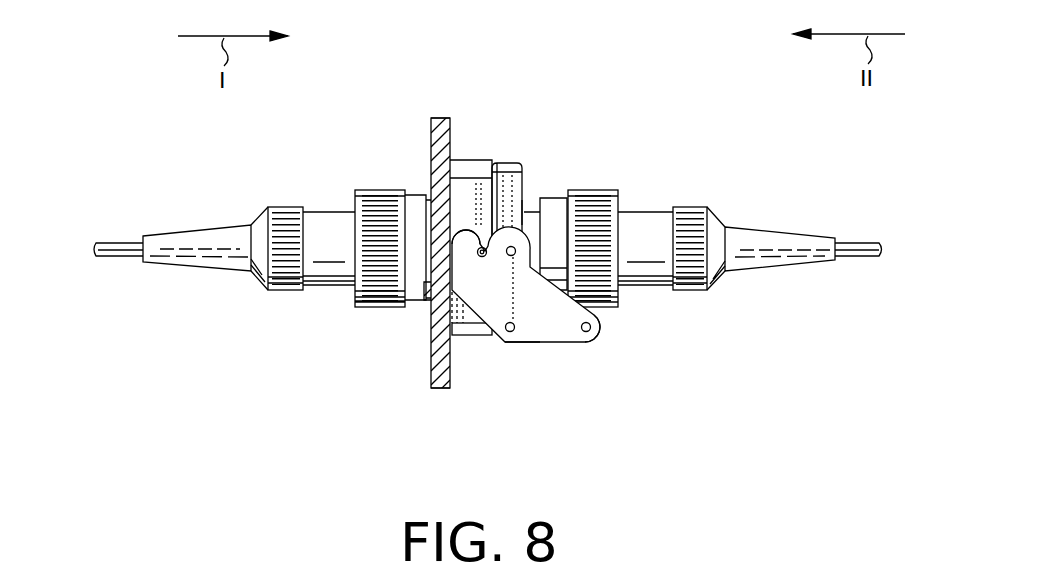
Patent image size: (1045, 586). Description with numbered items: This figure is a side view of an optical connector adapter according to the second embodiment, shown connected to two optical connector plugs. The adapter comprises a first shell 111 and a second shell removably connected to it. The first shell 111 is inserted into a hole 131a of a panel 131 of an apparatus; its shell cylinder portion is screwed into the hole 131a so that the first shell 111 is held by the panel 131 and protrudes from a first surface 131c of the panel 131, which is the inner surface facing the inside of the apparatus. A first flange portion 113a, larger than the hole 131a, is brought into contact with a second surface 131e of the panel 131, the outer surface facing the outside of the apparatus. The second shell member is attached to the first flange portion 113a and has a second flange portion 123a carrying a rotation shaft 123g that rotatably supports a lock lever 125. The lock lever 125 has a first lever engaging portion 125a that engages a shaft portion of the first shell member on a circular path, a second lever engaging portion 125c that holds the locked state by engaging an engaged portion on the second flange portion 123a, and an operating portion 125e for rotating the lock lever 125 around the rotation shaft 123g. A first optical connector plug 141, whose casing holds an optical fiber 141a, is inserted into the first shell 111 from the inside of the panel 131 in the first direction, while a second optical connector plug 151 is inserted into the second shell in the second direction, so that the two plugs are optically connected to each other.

The first shell 111 is at (489, 336).
The first flange portion 113a is at (465, 229).
The second flange portion 123a is at (517, 165).
The rotation shaft 123g is at (522, 208).
The lock lever 125 is at (514, 342).
The first lever engaging portion 125a is at (493, 162).
The second lever engaging portion 125c is at (523, 336).
The operating portion 125e is at (595, 337).
The panel 131 is at (440, 118).
The hole 131a is at (431, 284).
The first surface 131c is at (433, 378).
The second surface 131e is at (451, 118).
The first optical connector plug 141 is at (372, 190).
The optical fiber 141a is at (115, 243).
The second optical connector plug 151 is at (600, 190).